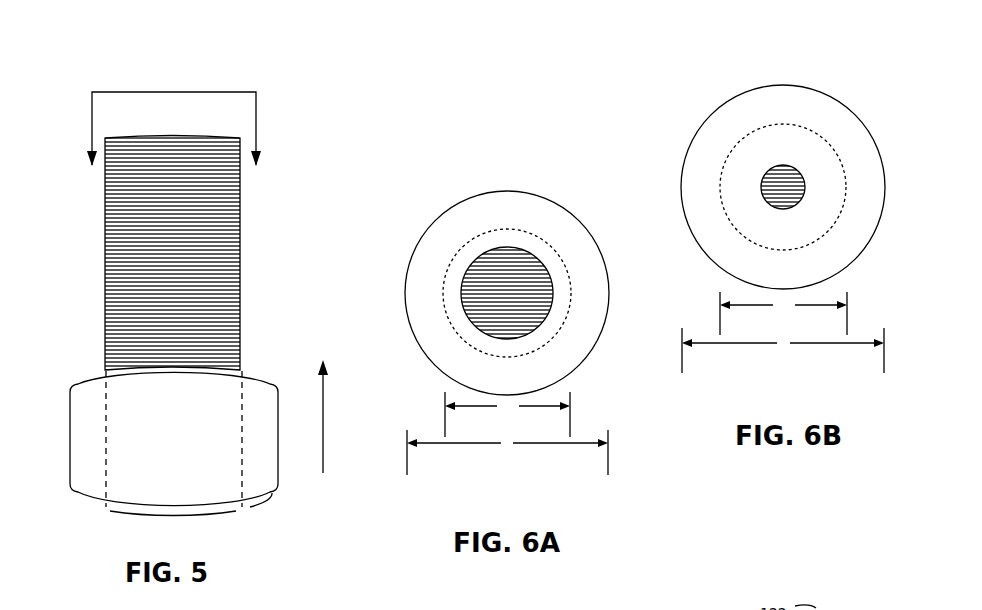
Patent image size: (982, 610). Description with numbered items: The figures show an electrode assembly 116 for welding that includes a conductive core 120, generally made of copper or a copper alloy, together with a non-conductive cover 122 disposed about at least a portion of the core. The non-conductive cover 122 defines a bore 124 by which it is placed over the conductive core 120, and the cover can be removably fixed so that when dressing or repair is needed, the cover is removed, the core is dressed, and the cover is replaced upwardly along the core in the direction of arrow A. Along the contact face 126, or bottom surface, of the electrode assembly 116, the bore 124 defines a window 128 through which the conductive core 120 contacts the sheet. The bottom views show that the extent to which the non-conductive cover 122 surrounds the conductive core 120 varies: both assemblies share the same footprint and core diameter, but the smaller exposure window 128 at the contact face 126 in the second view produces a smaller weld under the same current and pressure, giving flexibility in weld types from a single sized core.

In FIG. 5, the electrode assembly 116 is at (87, 254).
In FIG. 6A, the electrode assembly 116 is at (413, 229).
In FIG. 6B, the electrode assembly 116 is at (665, 91).
In FIG. 5, the conductive core 120 is at (168, 229).
In FIG. 6A, the conductive core 120 is at (516, 229).
In FIG. 6B, the conductive core 120 is at (783, 122).
In FIG. 5, the non-conductive cover 122 is at (93, 430).
In FIG. 6A, the non-conductive cover 122 is at (419, 293).
In FIG. 6B, the non-conductive cover 122 is at (697, 168).
In FIG. 5, the bore 124 is at (205, 518).
In FIG. 5, the contact face 126 is at (257, 505).
In FIG. 6A, the window 128 is at (506, 247).
In FIG. 6B, the window 128 is at (782, 165).